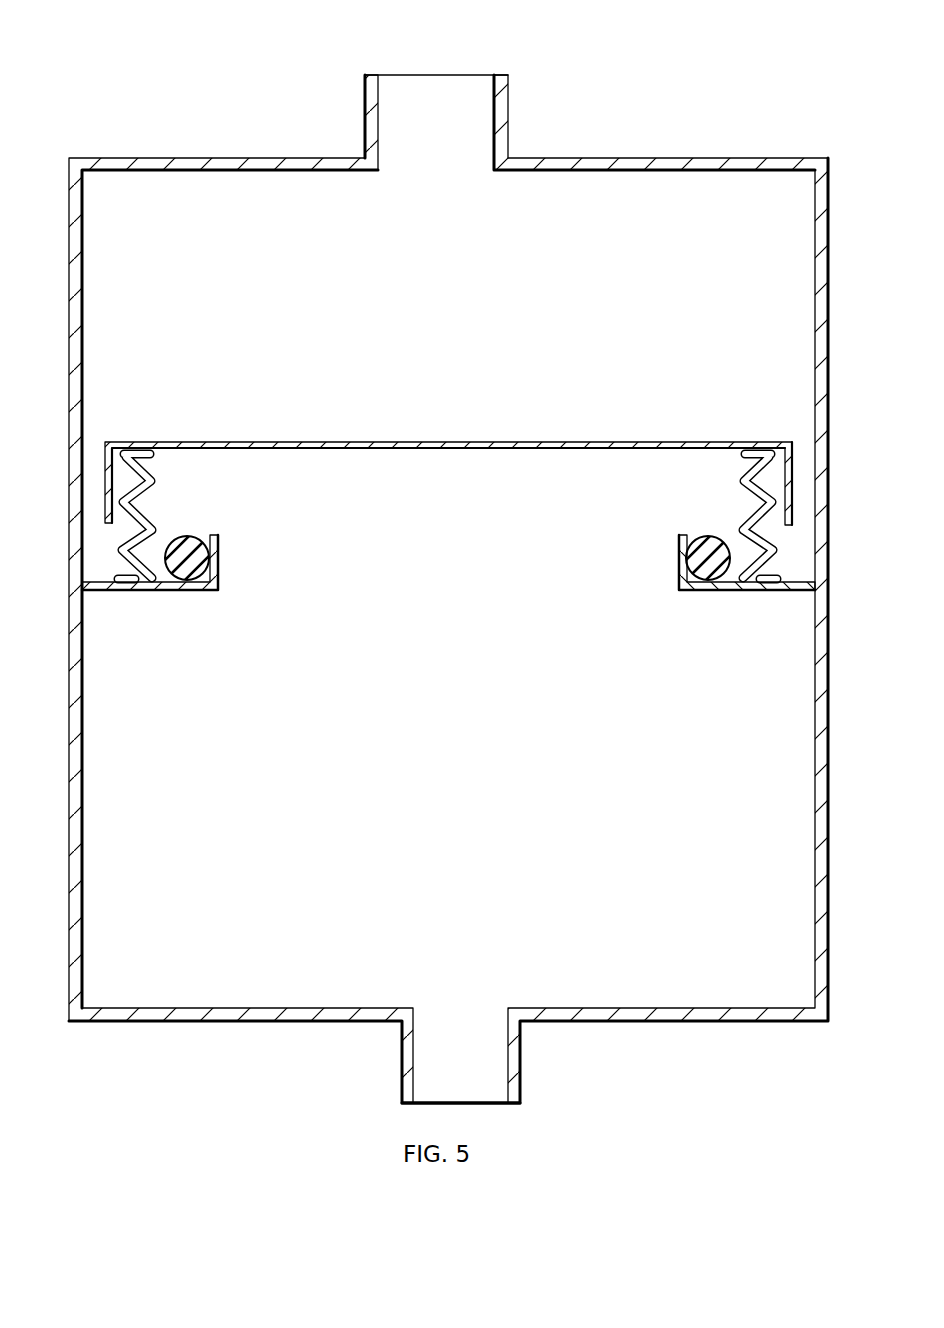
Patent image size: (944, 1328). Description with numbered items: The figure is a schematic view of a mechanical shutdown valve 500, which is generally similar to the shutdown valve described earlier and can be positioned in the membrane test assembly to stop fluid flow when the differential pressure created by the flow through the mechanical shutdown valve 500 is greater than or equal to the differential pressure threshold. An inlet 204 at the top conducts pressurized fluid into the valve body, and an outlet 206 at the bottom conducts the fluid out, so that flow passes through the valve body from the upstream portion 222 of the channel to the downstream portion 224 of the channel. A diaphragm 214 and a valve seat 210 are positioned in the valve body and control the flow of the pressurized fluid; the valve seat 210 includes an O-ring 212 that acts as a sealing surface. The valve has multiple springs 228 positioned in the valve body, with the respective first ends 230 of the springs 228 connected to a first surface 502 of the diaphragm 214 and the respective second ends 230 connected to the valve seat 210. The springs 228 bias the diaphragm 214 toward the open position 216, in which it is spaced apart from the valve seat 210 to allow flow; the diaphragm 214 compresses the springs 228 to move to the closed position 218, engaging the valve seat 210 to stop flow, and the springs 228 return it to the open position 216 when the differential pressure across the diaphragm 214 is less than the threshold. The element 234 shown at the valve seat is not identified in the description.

The mechanical shutdown valve 500 is at (158, 80).
The inlet 204 is at (365, 118).
The outlet 206 is at (520, 1058).
The valve seat 210 is at (661, 584).
The O-ring 212 is at (690, 586).
The diaphragm 214 is at (556, 441).
The open position 216 is at (276, 425).
The closed position 218 is at (290, 558).
The upstream portion 222 is at (471, 316).
The downstream portion 224 is at (471, 823).
The springs 228 is at (151, 479).
The ends of the springs 230 is at (150, 450).
The retaining bracket 234 is at (134, 591).
The first surface 502 is at (452, 450).